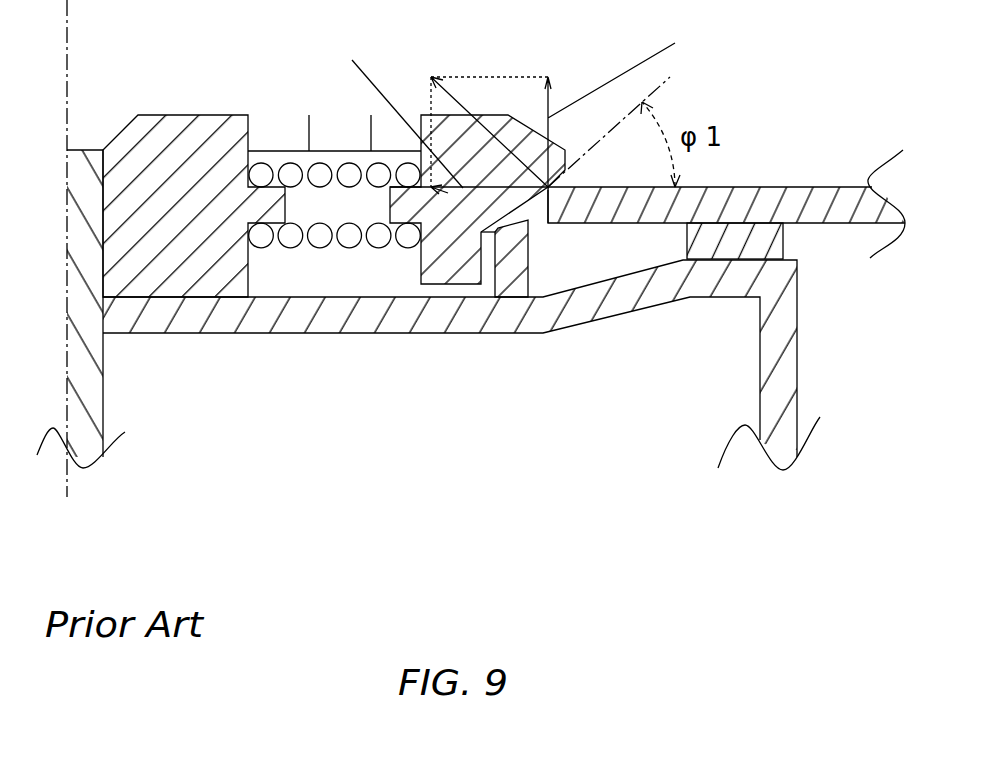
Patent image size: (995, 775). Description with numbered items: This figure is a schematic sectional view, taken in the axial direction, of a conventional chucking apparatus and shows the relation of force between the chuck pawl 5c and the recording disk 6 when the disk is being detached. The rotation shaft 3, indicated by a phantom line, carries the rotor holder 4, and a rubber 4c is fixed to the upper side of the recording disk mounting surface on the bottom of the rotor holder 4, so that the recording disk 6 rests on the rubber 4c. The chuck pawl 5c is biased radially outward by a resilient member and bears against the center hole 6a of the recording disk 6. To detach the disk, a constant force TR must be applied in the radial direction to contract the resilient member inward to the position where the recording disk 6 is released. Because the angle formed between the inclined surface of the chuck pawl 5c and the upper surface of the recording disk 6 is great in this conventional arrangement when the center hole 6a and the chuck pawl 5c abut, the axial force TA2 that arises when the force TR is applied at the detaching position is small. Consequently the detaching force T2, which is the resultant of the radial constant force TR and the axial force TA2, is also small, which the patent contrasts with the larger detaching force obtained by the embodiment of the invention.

The shaft 3 is at (92, 410).
The rotor holder 4 is at (783, 442).
The rubber 4c is at (733, 247).
The chuck pawl 5c is at (448, 265).
The recording disk 6 is at (807, 203).
The center hole 6a is at (556, 199).
The detaching force T2 is at (475, 119).
The axial force TA2 is at (633, 102).
The constant force TR is at (394, 108).